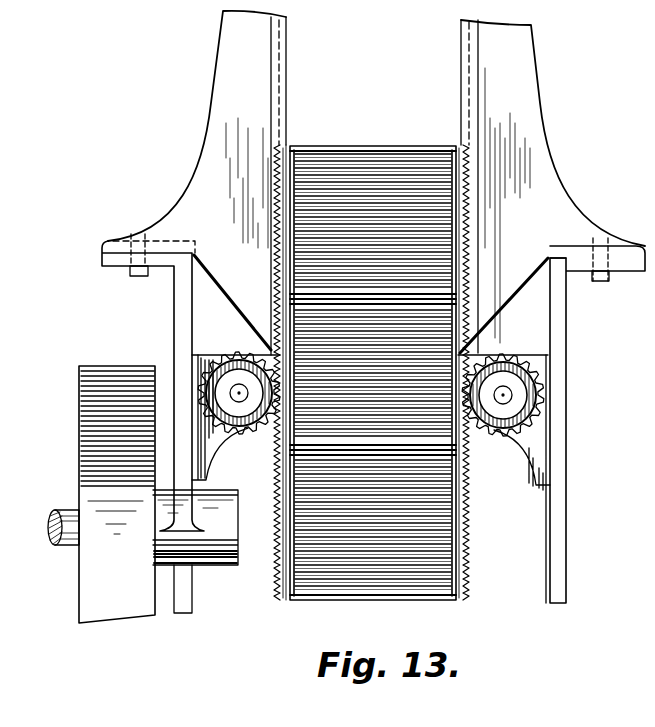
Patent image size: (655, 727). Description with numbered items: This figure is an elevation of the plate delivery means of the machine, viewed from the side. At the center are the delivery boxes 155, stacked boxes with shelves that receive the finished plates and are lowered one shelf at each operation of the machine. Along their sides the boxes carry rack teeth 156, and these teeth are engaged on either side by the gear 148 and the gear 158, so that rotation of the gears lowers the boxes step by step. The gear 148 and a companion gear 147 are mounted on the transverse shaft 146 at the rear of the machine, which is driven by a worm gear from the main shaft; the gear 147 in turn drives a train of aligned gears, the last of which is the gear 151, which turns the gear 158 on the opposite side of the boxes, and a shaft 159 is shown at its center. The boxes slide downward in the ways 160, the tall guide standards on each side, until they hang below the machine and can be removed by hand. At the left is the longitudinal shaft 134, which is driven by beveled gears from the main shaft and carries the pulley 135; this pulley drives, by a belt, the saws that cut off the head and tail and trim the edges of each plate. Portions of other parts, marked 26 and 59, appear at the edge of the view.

The ways 160 is at (222, 43).
The delivery boxes 155 is at (393, 130).
The rack teeth 156 is at (265, 580).
The gear 147 is at (213, 347).
The gear 148 is at (223, 347).
The transverse shaft 146 is at (232, 394).
The gear 151 is at (500, 340).
The shaft 159 is at (500, 390).
The gear 158 is at (497, 440).
The longitudinal shaft 134 is at (37, 530).
The pulley 135 is at (85, 592).
The frame member 26 is at (18, 158).
The shaft 59 is at (18, 366).